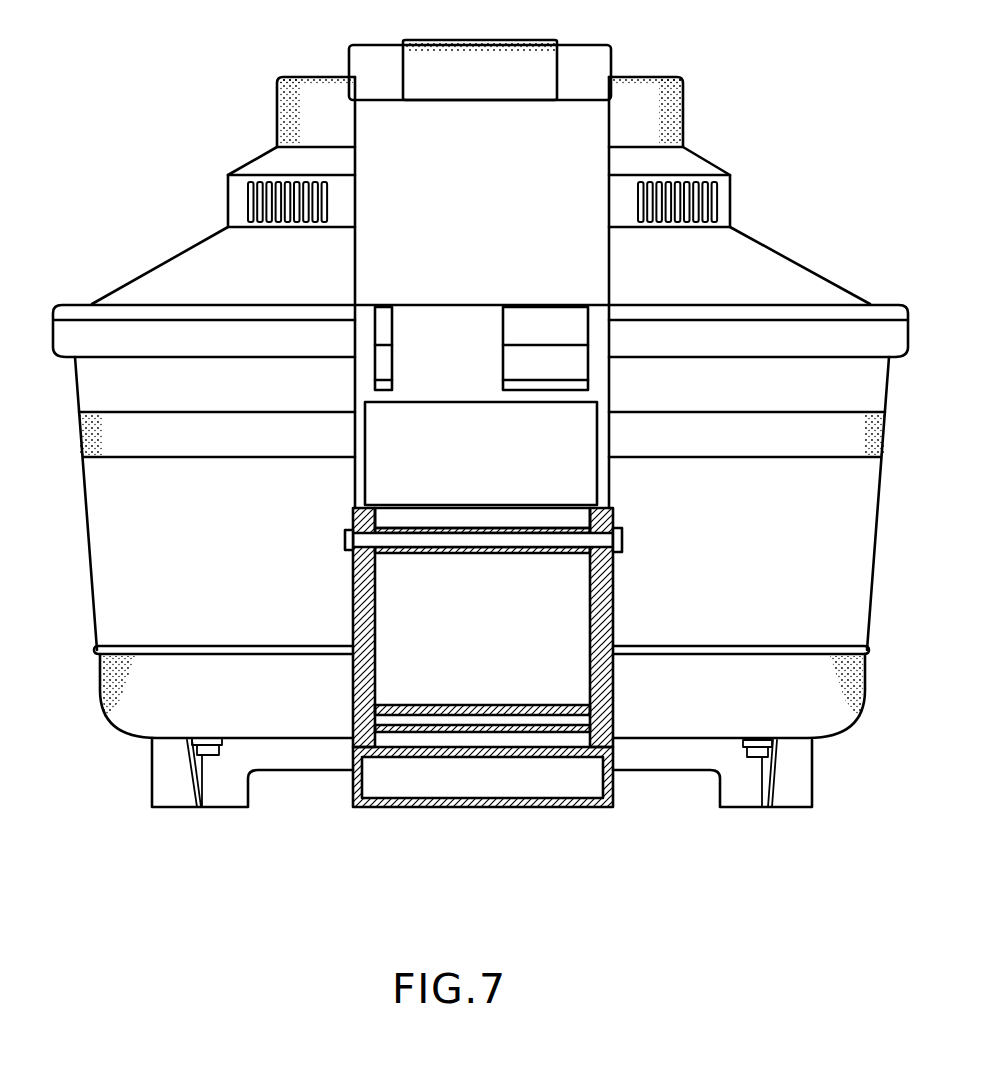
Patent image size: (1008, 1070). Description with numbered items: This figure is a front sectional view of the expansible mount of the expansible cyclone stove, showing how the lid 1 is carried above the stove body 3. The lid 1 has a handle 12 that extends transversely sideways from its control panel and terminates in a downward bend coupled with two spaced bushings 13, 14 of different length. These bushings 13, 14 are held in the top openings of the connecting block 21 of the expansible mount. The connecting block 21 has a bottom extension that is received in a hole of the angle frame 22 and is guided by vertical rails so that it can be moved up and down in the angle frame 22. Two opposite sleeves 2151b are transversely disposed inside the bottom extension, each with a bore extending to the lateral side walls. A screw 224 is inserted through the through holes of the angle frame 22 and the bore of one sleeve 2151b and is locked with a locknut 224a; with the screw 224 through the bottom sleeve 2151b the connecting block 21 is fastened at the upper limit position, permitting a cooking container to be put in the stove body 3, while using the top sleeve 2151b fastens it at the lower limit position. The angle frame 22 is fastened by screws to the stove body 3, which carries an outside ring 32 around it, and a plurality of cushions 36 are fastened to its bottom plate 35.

The lid 1 is at (313, 108).
The handle 12 is at (585, 262).
The connecting block 21 is at (597, 358).
The bushing 13 is at (549, 330).
The bushing 14 is at (383, 332).
The stove body 3 is at (107, 592).
The outside ring 32 is at (832, 440).
The bottom plate 35 is at (803, 715).
The cushions 36 is at (795, 800).
The angle frame 22 is at (613, 612).
The sleeve 2151b is at (508, 553).
The screw 224 is at (617, 533).
The locknut 224a is at (344, 537).